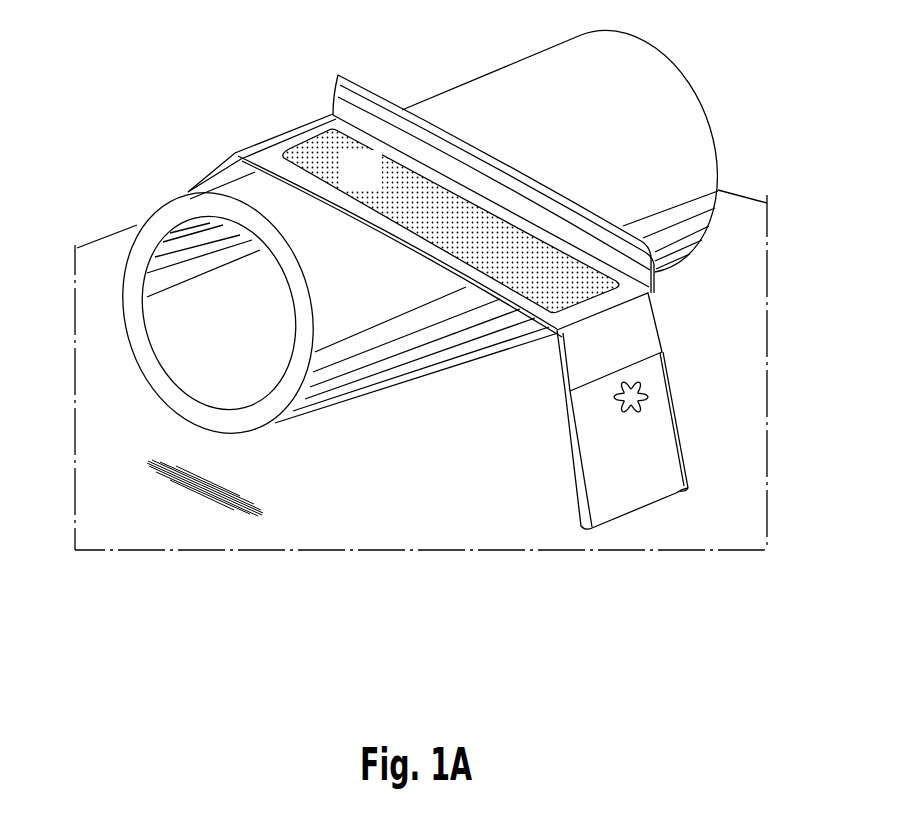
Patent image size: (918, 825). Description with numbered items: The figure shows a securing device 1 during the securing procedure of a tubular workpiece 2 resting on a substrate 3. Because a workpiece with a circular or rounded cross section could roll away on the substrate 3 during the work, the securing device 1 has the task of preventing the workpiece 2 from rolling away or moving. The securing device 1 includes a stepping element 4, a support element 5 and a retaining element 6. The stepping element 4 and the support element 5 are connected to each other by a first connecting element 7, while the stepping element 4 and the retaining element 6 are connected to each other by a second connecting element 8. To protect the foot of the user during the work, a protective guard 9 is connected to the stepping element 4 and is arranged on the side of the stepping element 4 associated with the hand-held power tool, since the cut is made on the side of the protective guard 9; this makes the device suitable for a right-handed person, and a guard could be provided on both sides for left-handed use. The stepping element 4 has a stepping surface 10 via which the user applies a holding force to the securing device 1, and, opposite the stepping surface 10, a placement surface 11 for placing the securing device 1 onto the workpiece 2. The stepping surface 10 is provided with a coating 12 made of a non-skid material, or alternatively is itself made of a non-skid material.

The securing device 1 is at (416, 421).
The tubular workpiece 2 is at (409, 234).
The substrate 3 is at (118, 430).
The stepping element 4 is at (470, 233).
The support element 5 is at (686, 418).
The retaining element 6 is at (469, 279).
The first connecting element 7 is at (652, 293).
The second connecting element 8 is at (288, 128).
The protective guard 9 is at (383, 133).
The stepping surface 10 is at (553, 277).
The placement surface 11 is at (478, 289).
The coating 12 is at (376, 183).